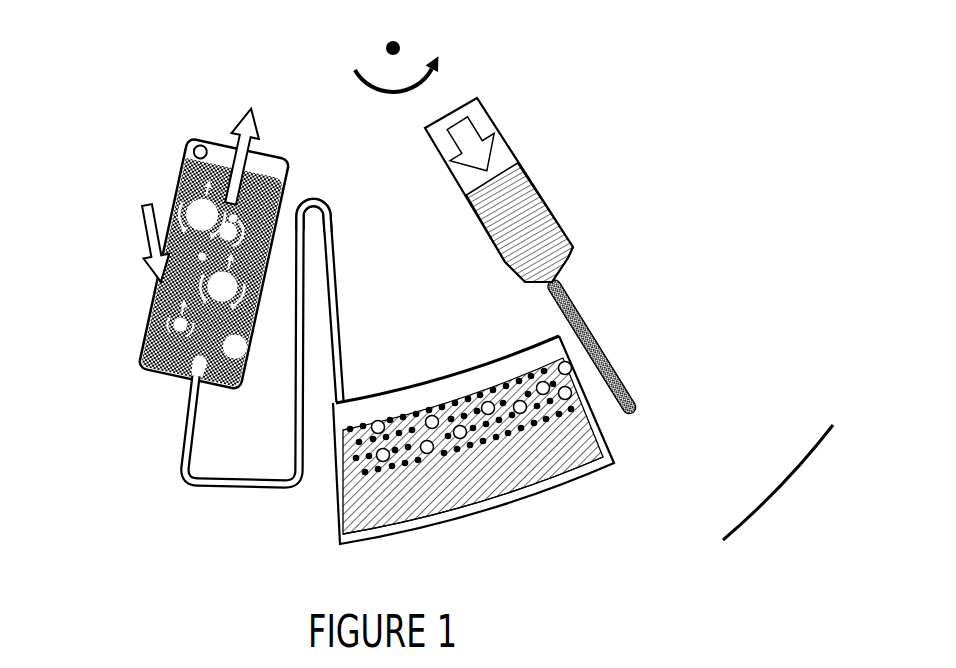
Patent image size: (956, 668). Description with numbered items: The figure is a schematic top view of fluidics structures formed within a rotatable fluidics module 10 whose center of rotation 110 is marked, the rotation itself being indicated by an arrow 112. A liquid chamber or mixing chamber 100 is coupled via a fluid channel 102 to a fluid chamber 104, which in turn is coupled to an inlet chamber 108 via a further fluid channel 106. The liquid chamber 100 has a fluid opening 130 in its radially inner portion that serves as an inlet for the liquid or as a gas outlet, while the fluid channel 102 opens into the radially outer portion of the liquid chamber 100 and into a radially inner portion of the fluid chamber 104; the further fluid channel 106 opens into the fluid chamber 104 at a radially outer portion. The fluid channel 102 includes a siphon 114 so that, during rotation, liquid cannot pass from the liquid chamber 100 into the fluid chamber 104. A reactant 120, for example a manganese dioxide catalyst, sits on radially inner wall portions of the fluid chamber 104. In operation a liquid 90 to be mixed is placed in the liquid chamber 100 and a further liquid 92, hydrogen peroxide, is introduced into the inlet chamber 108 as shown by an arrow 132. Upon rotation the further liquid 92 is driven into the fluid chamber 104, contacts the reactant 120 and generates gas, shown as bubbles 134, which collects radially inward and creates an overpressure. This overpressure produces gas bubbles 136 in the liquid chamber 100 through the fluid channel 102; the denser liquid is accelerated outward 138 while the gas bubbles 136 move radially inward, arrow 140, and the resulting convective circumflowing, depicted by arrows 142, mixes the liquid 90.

The fluidics module 10 is at (752, 518).
The liquid 90 is at (275, 168).
The further liquid 92 is at (563, 216).
The liquid chamber 100 is at (176, 188).
The fluid channel 102 is at (197, 490).
The fluid chamber 104 is at (418, 518).
The further fluid channel 106 is at (620, 370).
The inlet chamber 108 is at (509, 143).
The center of rotation 110 is at (386, 49).
The rotation arrow 112 is at (381, 93).
The siphon 114 is at (336, 212).
The reactant 120 is at (518, 440).
The fluid opening 130 is at (186, 147).
The arrow 132 is at (488, 115).
The bubbles 134 is at (572, 393).
The gas bubbles 136 is at (207, 286).
The outward acceleration arrow 138 is at (139, 220).
The arrow 140 is at (249, 107).
The arrows 142 is at (165, 328).